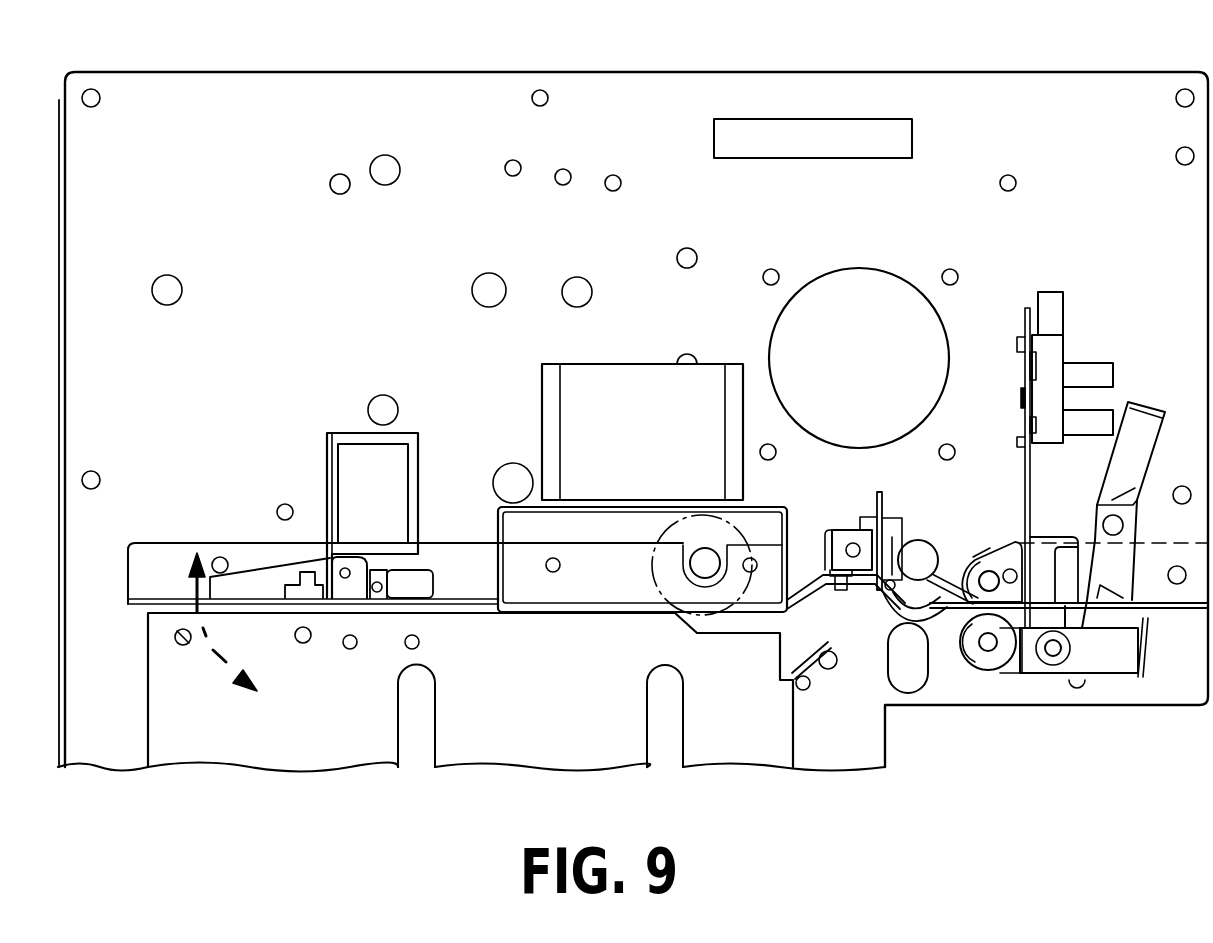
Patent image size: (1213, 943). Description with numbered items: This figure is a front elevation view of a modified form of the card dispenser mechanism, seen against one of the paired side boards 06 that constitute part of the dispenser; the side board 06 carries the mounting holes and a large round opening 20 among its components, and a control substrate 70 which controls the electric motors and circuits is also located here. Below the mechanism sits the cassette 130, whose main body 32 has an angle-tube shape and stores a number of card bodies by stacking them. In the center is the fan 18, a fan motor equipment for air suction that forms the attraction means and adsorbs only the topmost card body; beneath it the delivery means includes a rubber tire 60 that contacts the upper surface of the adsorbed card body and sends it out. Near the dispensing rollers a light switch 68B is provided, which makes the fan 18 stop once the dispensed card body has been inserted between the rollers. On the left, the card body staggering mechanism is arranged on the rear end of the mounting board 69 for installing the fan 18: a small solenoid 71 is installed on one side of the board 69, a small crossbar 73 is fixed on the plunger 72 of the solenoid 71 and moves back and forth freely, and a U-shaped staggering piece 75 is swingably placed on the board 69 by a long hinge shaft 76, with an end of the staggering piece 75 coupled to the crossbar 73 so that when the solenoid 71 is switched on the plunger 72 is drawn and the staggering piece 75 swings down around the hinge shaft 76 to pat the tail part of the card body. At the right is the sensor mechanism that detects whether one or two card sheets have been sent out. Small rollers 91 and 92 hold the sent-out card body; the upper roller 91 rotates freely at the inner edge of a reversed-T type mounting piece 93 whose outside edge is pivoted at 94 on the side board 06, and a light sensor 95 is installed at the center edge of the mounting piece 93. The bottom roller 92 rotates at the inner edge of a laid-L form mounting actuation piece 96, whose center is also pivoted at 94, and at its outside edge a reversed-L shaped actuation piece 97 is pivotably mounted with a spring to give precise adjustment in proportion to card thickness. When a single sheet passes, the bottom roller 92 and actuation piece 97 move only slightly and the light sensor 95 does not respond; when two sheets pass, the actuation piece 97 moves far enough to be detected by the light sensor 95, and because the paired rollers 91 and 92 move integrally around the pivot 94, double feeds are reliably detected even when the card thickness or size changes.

The side board 06 is at (580, 104).
The circular opening 20 is at (862, 294).
The fan 18 is at (607, 563).
The tire 60 is at (697, 525).
The solenoid 71 is at (392, 458).
The staggering piece 75 is at (252, 583).
The hinge shaft 76 is at (345, 573).
The crossbar 73 is at (376, 573).
The plunger 72 is at (380, 563).
The mounting board 69 is at (483, 600).
The light switch 68B is at (893, 568).
The substrate 70 is at (824, 649).
The upper roller 91 is at (968, 560).
The bottom roller 92 is at (973, 670).
The mounting actuation piece 96 is at (1018, 673).
The pivot 94 is at (1053, 660).
The mounting piece 93 is at (1022, 505).
The light sensor 95 is at (1085, 370).
The actuation piece 97 is at (1147, 425).
The main body 32 is at (227, 737).
The cassette 130 is at (558, 725).